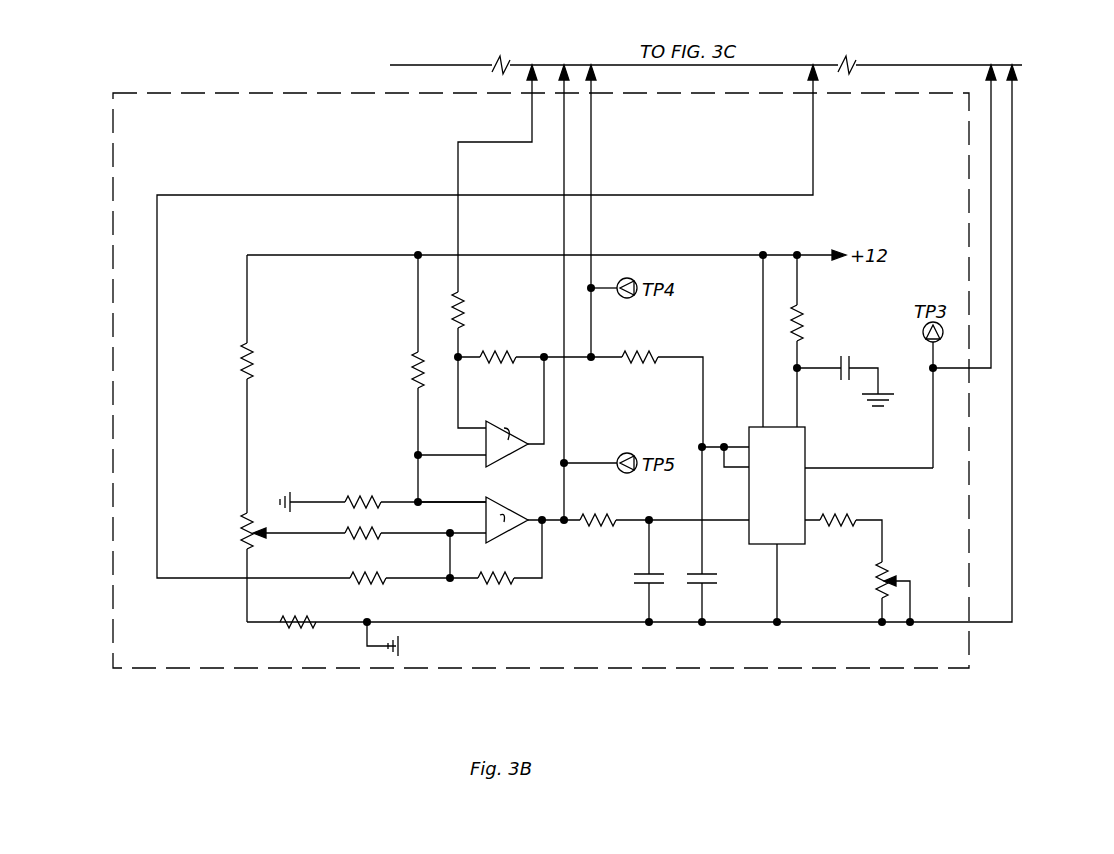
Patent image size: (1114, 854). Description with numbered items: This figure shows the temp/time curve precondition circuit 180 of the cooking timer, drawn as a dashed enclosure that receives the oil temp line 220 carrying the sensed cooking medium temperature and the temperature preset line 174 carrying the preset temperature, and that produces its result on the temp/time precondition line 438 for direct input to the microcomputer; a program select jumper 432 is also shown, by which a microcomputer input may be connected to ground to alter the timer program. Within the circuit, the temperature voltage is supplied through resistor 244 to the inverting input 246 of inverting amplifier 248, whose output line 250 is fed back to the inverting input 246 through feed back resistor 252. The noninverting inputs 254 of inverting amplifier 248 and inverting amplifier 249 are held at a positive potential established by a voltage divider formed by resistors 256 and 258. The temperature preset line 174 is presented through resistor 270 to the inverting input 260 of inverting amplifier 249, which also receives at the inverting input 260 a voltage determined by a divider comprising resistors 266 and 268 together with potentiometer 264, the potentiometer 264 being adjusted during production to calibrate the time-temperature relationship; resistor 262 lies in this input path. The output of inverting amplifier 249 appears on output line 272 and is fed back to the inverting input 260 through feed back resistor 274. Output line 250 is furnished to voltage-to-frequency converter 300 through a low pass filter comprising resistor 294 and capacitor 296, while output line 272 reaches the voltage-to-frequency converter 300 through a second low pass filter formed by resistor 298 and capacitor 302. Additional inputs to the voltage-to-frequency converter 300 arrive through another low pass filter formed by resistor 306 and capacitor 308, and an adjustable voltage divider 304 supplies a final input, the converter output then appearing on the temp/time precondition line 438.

The temp/time curve precondition circuit 180 is at (113, 154).
The oil temp line 220 is at (518, 142).
The resistor 244 is at (462, 312).
The output line 272 is at (564, 158).
The output line 250 is at (593, 164).
The temperature preset line 174 is at (813, 160).
The temp/time precondition line 438 is at (991, 140).
The program select jumper 432 is at (1012, 174).
The resistor 266 is at (247, 382).
The potentiometer 264 is at (240, 528).
The resistor 258 is at (418, 372).
The noninverting inputs 254 is at (418, 482).
The resistor 256 is at (385, 492).
The resistor 262 is at (360, 538).
The resistor 270 is at (384, 582).
The feed back resistor 274 is at (505, 586).
The resistor 268 is at (316, 624).
The inverting input 246 is at (458, 408).
The inverting amplifier 248 is at (506, 446).
The inverting amplifier 249 is at (498, 517).
The inverting input 260 is at (474, 533).
The feed back resistor 252 is at (482, 362).
The resistor 294 is at (644, 353).
The resistor 298 is at (604, 518).
The capacitor 302 is at (641, 580).
The capacitor 296 is at (706, 582).
The voltage-to-frequency converter 300 is at (796, 497).
The resistor 306 is at (800, 320).
The capacitor 308 is at (846, 360).
The adjustable voltage divider 304 is at (884, 565).